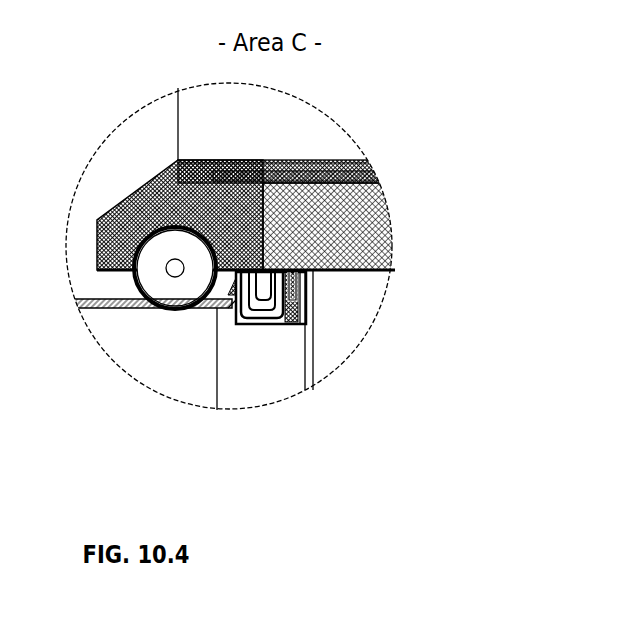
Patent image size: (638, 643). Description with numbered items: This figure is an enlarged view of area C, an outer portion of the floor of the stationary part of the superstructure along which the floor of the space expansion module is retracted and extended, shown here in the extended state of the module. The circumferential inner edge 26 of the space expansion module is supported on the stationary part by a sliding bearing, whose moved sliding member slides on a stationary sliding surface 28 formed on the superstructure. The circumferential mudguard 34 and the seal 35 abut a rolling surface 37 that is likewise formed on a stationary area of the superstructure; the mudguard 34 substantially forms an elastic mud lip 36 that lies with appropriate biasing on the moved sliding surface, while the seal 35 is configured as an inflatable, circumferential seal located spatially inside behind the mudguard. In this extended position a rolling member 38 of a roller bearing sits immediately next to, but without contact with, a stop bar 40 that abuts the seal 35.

The circumferential inner edge 26 is at (280, 210).
The stationary sliding surface 28 is at (165, 292).
The mudguard 34 is at (305, 308).
The seal 35 is at (270, 275).
The elastic mud lip 36 is at (317, 268).
The rolling surface 37 is at (83, 298).
The rolling member 38 is at (150, 192).
The stop bar 40 is at (233, 280).